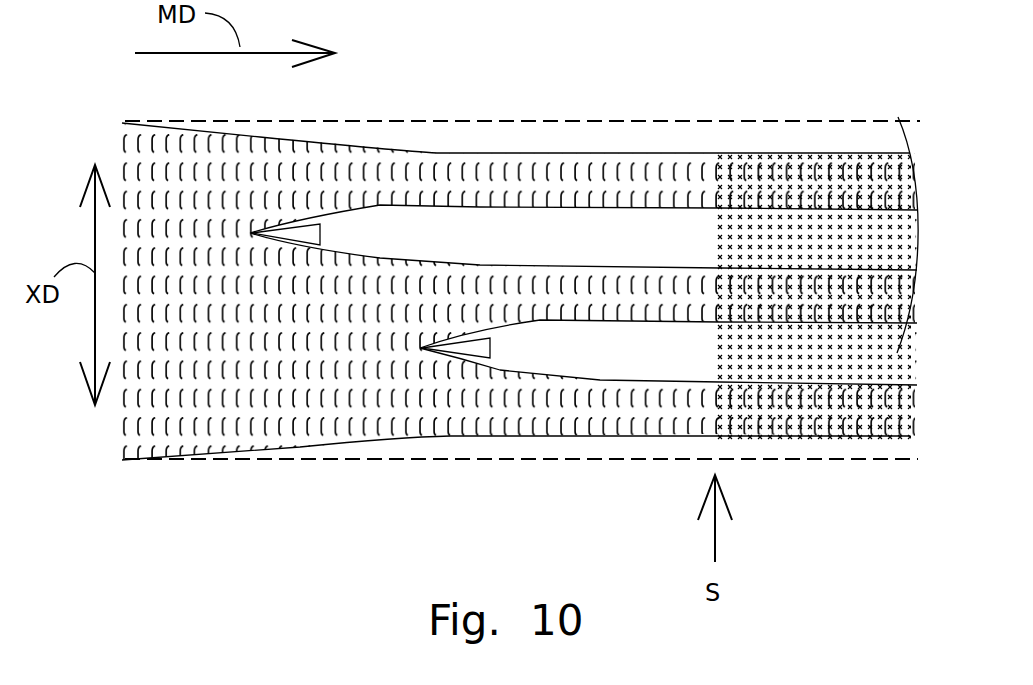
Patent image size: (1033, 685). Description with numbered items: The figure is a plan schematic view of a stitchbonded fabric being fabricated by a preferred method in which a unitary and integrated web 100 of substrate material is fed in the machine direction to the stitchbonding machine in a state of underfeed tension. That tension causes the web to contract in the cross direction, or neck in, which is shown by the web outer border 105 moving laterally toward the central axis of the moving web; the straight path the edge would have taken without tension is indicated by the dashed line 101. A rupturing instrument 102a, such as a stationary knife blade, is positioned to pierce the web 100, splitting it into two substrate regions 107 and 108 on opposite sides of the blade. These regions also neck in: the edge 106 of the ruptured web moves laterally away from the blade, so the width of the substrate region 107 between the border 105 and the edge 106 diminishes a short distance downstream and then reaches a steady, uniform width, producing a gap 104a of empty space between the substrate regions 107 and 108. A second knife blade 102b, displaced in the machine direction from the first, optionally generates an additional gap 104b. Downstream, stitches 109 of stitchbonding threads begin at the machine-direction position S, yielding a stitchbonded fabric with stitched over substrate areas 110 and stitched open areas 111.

The web 100 is at (212, 385).
The dashed line 101 is at (694, 121).
The rupturing instrument 102a is at (300, 225).
The second knife blade 102b is at (478, 355).
The gap 104a is at (470, 247).
The gap 104b is at (613, 367).
The web outer border 105 is at (558, 152).
The edge 106 is at (320, 208).
The substrate region 107 is at (430, 167).
The substrate region 108 is at (453, 297).
The stitches 109 is at (718, 256).
The stitched over substrate areas 110 is at (793, 293).
The stitched open areas 111 is at (865, 233).